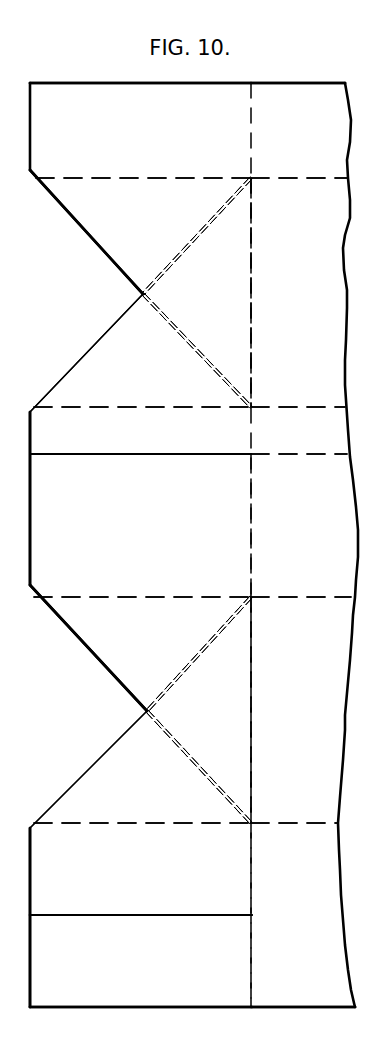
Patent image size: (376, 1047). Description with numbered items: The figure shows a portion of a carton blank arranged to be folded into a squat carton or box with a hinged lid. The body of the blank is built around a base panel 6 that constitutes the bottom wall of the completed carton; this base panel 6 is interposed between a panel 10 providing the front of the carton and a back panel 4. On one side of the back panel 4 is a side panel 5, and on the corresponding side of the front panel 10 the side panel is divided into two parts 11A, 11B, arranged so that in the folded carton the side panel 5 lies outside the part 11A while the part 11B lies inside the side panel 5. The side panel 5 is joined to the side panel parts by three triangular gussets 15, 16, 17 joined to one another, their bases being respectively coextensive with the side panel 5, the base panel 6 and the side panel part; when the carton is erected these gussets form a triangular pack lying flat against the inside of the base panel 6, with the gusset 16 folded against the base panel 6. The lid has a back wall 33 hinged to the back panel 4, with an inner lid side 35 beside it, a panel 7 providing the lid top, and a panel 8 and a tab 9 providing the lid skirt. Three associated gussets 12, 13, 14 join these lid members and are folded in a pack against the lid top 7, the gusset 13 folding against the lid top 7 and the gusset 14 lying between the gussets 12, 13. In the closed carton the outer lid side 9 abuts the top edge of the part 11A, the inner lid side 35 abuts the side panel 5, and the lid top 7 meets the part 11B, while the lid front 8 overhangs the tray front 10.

The tab 9 is at (126, 152).
The panel 8 is at (300, 152).
The gusset 14 is at (122, 229).
The gusset 13 is at (194, 307).
The panel 7 is at (286, 305).
The gusset 12 is at (127, 374).
The inner lid side 35 is at (132, 440).
The back wall 33 is at (284, 440).
The side panel 5 is at (135, 544).
The back panel 4 is at (298, 544).
The gusset 15 is at (125, 650).
The gusset 16 is at (204, 725).
The base panel 6 is at (295, 726).
The gusset 17 is at (130, 789).
The part 11A is at (135, 890).
The panel 10 is at (290, 890).
The part 11B is at (137, 982).